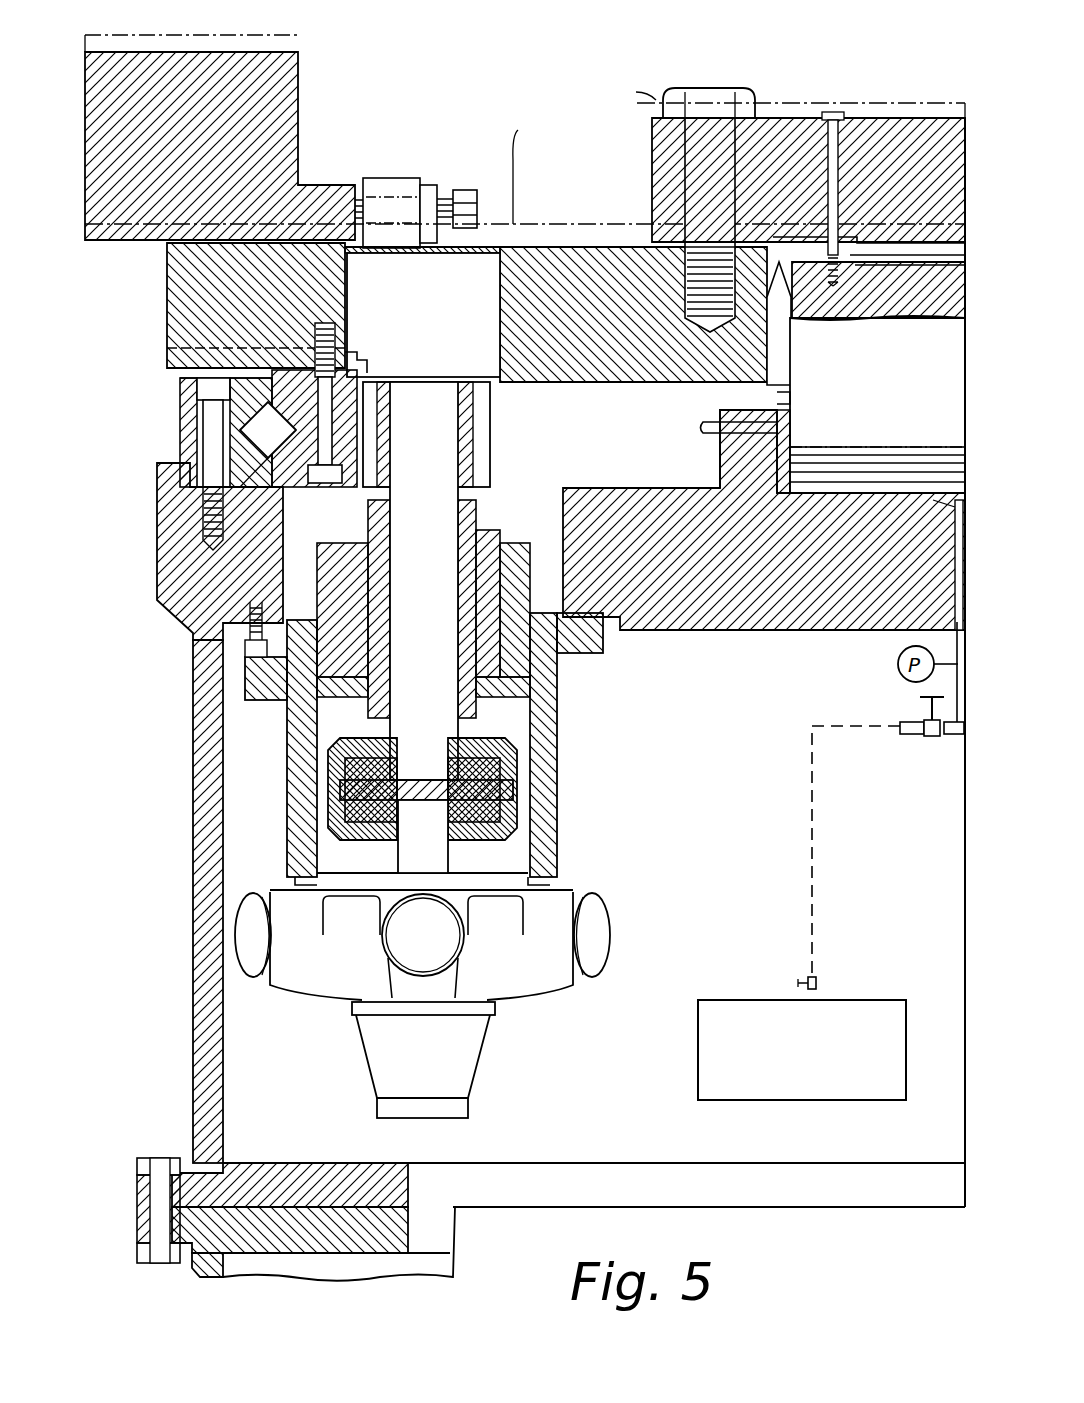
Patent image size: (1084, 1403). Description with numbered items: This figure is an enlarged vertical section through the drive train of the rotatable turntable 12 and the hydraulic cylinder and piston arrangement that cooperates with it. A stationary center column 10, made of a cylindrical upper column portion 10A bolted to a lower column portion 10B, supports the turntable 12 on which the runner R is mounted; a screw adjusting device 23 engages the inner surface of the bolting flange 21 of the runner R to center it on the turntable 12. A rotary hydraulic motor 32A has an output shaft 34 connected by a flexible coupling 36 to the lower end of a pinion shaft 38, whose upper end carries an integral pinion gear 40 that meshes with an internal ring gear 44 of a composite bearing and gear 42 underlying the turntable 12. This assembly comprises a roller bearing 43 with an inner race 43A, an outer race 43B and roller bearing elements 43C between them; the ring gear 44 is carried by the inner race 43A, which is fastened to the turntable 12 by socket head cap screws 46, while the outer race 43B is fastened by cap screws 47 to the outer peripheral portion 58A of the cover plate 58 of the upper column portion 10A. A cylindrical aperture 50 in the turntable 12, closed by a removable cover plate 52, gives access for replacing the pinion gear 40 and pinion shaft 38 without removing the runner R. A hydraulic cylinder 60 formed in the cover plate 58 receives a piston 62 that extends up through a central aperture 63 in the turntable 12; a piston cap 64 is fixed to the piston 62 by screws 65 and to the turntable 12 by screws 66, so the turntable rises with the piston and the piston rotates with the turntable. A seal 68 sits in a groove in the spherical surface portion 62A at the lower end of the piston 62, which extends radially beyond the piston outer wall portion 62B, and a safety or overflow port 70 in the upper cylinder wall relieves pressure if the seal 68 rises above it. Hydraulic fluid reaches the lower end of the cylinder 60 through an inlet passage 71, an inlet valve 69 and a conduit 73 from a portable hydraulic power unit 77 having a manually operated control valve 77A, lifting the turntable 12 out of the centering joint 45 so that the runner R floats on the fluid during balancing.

The runner R is at (205, 52).
The bolting flange 21 is at (268, 58).
The screw adjusting device 23 is at (412, 183).
The turntable 12 is at (582, 247).
The cover plate 52 is at (440, 253).
The cylindrical aperture 50 is at (505, 310).
The screws 66 is at (712, 95).
The piston cap 64 is at (905, 124).
The screws 65 is at (840, 176).
The aperture 63 is at (768, 348).
The piston 62 is at (896, 388).
The seal 68 is at (882, 472).
The piston outer wall portion 62B is at (788, 398).
The hydraulic cylinder 60 is at (838, 493).
The safety or overflow port 70 is at (735, 432).
The cover plate 58 is at (711, 630).
The spherical surface portion 62A is at (770, 488).
The inlet passage 71 is at (958, 552).
The composite bearing and gear 42 is at (180, 400).
The cap screws 47 is at (205, 440).
The outer race 43B is at (240, 387).
The inner race 43A is at (298, 372).
The roller bearing 43 is at (258, 405).
The roller bearing elements 43C is at (283, 446).
The socket head cap screws 46 is at (336, 336).
The centering joint 45 is at (358, 372).
The internal ring gear 44 is at (366, 446).
The pinion gear 40 is at (490, 450).
The pinion shaft 38 is at (432, 672).
The flexible coupling 36 is at (515, 790).
The output shaft 34 is at (437, 846).
The rotary hydraulic motor 32A is at (598, 915).
The outer peripheral portion 58A is at (160, 540).
The upper column portion 10A is at (193, 1052).
The center column 10 is at (137, 1207).
The lower column portion 10B is at (205, 1272).
The inlet valve 69 is at (916, 736).
The conduit 73 is at (808, 814).
The control valve 77A is at (818, 983).
The portable hydraulic power unit 77 is at (716, 1005).